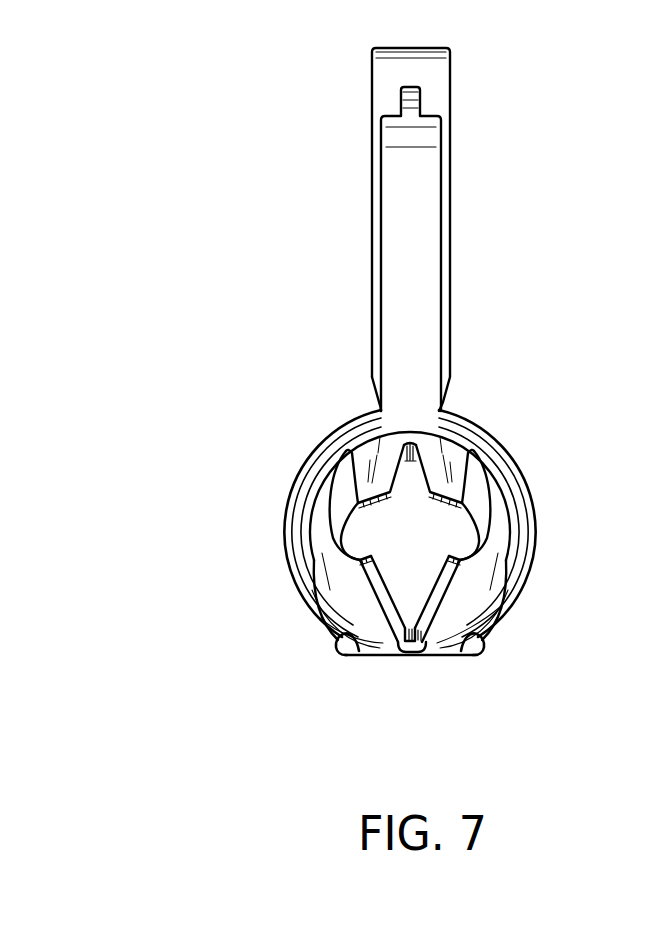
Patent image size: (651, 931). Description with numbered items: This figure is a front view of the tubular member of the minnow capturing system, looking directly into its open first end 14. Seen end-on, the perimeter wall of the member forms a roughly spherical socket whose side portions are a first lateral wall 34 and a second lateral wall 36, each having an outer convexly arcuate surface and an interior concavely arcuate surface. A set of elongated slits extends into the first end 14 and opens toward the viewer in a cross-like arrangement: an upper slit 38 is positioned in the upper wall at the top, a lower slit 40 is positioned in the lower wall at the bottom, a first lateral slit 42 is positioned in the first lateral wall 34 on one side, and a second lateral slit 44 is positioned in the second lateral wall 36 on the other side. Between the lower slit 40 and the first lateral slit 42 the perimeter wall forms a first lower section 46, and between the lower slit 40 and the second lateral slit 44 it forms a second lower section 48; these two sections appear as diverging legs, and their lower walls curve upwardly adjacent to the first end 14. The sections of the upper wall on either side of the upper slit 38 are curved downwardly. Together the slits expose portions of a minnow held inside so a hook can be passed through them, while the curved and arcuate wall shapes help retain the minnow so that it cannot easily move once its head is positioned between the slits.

The first end 14 is at (444, 505).
The first lateral wall 34 is at (534, 508).
The second lateral wall 36 is at (287, 512).
The upper slit 38 is at (412, 468).
The lower slit 40 is at (407, 643).
The first lateral slit 42 is at (490, 520).
The second lateral slit 44 is at (326, 531).
The first lower section 46 is at (451, 578).
The second lower section 48 is at (370, 587).